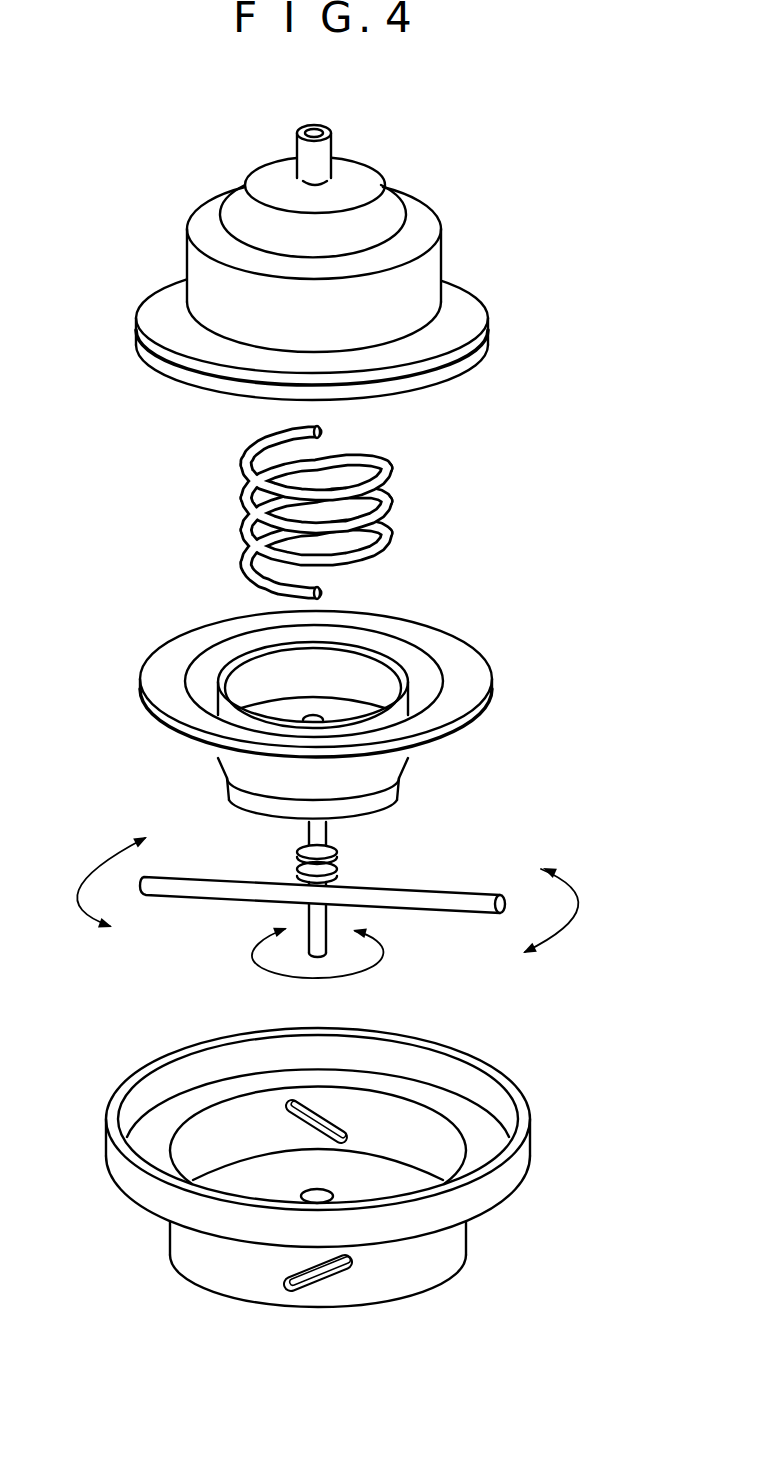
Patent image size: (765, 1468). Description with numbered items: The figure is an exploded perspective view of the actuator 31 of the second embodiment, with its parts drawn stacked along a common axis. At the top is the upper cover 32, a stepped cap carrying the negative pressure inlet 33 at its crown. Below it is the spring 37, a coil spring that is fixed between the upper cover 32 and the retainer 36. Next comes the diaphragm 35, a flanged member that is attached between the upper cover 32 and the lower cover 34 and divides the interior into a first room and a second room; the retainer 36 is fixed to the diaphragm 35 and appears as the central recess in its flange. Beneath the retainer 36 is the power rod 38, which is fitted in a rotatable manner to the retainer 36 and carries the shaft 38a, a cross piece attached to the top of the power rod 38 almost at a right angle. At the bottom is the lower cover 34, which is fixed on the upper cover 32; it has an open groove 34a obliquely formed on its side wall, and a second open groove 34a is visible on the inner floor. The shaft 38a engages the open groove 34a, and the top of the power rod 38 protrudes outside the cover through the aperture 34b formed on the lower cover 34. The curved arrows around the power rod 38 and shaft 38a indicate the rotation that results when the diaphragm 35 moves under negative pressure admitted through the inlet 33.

The actuator 31 is at (373, 251).
The upper cover 32 is at (430, 267).
The negative pressure inlet 33 is at (325, 128).
The lower cover 34 is at (338, 1156).
The open groove 34a is at (337, 1117).
The aperture 34b is at (302, 1194).
The diaphragm 35 is at (361, 692).
The retainer 36 is at (403, 663).
The spring 37 is at (393, 468).
The power rod 38 is at (327, 896).
The shaft 38a is at (478, 898).